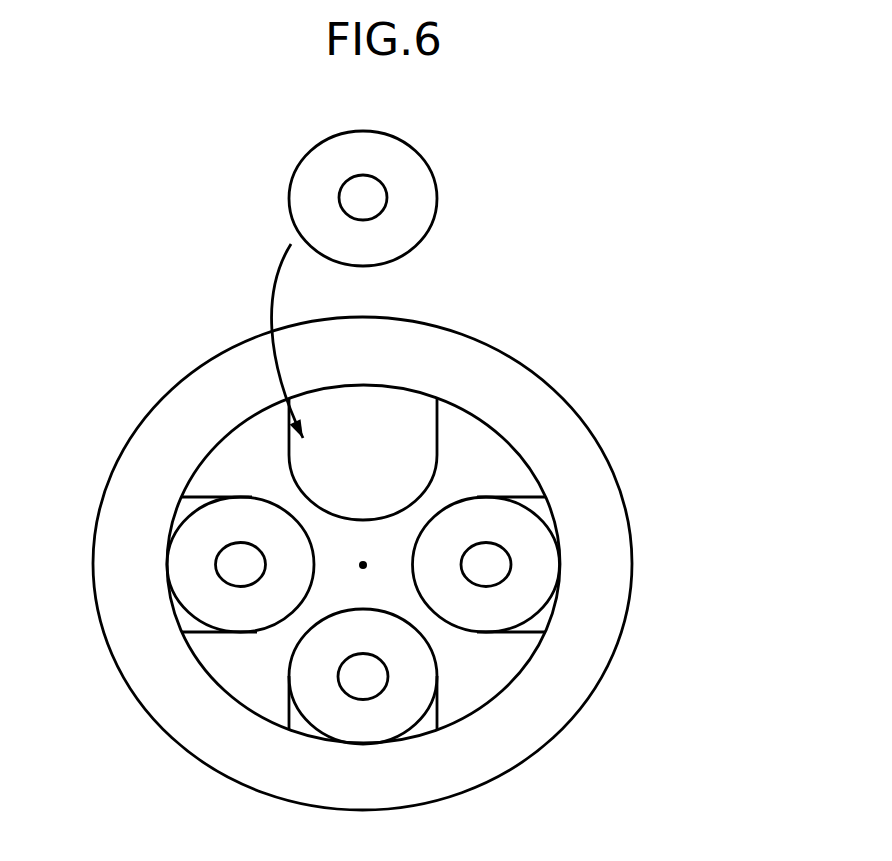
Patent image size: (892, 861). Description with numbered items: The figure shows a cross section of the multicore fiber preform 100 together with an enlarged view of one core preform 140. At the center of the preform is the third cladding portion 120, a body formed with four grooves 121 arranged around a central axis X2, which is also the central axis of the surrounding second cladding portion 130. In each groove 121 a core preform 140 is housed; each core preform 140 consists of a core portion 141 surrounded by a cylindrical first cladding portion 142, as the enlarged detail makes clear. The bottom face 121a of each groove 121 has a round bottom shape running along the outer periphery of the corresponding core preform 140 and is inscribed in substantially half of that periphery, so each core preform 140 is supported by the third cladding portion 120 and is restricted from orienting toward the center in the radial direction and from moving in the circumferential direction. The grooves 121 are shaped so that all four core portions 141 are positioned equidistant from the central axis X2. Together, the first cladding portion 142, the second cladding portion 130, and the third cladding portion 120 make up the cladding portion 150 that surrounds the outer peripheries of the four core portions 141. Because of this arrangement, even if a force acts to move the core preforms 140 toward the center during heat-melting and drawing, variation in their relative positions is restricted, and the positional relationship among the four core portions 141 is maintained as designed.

The multicore fiber preform 100 is at (140, 326).
The third cladding portion 120 is at (228, 463).
The groove 121 is at (436, 420).
The bottom face 121a is at (416, 565).
The second cladding portion 130 is at (498, 364).
The core preform 140 is at (440, 437).
The core portion 141 is at (372, 187).
The first cladding portion 142 is at (425, 198).
The cladding portion 150 is at (650, 417).
The central axis X2 is at (363, 565).